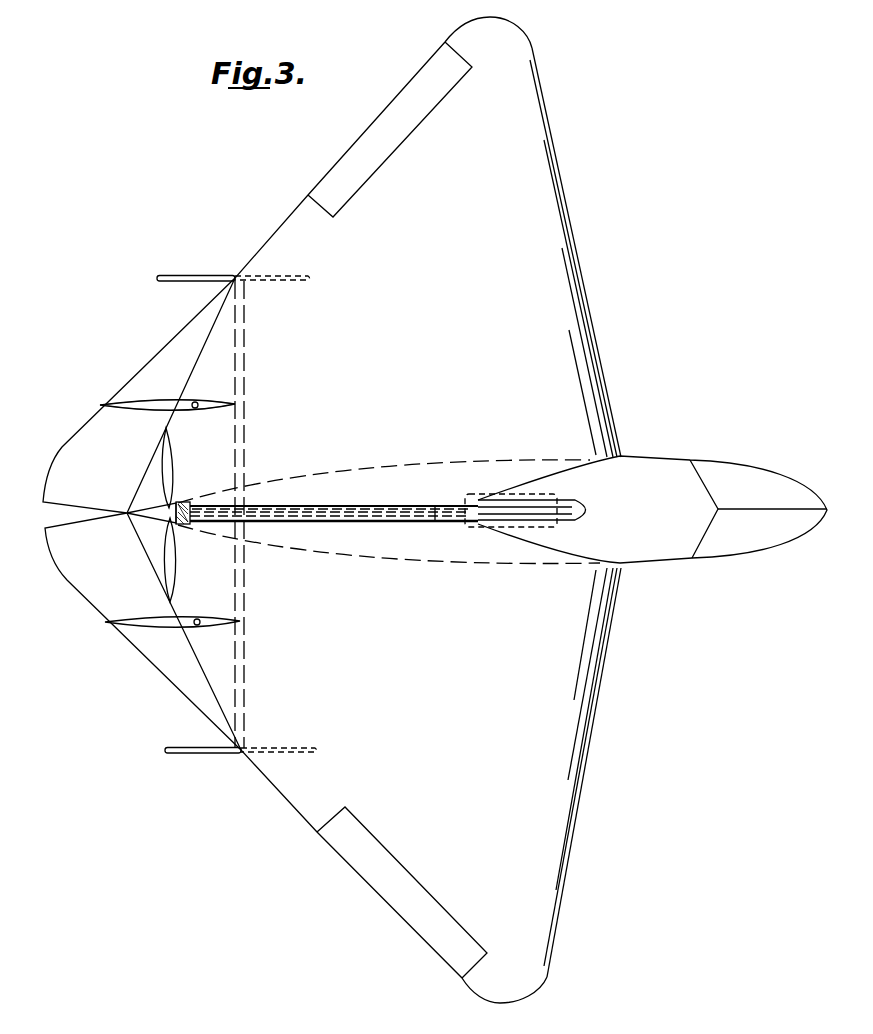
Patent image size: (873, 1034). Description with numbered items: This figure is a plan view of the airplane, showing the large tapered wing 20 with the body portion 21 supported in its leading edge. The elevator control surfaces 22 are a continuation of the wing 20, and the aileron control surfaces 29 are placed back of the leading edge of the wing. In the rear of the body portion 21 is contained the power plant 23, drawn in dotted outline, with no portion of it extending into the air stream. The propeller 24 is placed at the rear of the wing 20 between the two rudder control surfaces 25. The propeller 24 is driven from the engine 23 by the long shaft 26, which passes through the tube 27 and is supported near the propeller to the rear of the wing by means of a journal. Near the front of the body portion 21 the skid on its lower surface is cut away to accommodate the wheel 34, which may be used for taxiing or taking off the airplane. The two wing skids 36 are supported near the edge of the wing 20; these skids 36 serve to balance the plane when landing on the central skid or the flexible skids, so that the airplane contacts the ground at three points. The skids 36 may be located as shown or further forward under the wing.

The tapered wing 20 is at (290, 228).
The body portion 21 is at (690, 462).
The elevator control surfaces 22 is at (147, 400).
The power plant 23 is at (474, 494).
The propeller 24 is at (160, 462).
The rudder control surfaces 25 is at (160, 400).
The long shaft 26 is at (360, 505).
The tube 27 is at (312, 505).
The aileron control surfaces 29 is at (375, 128).
The wheel 34 is at (163, 275).
The wing skids 36 is at (165, 750).